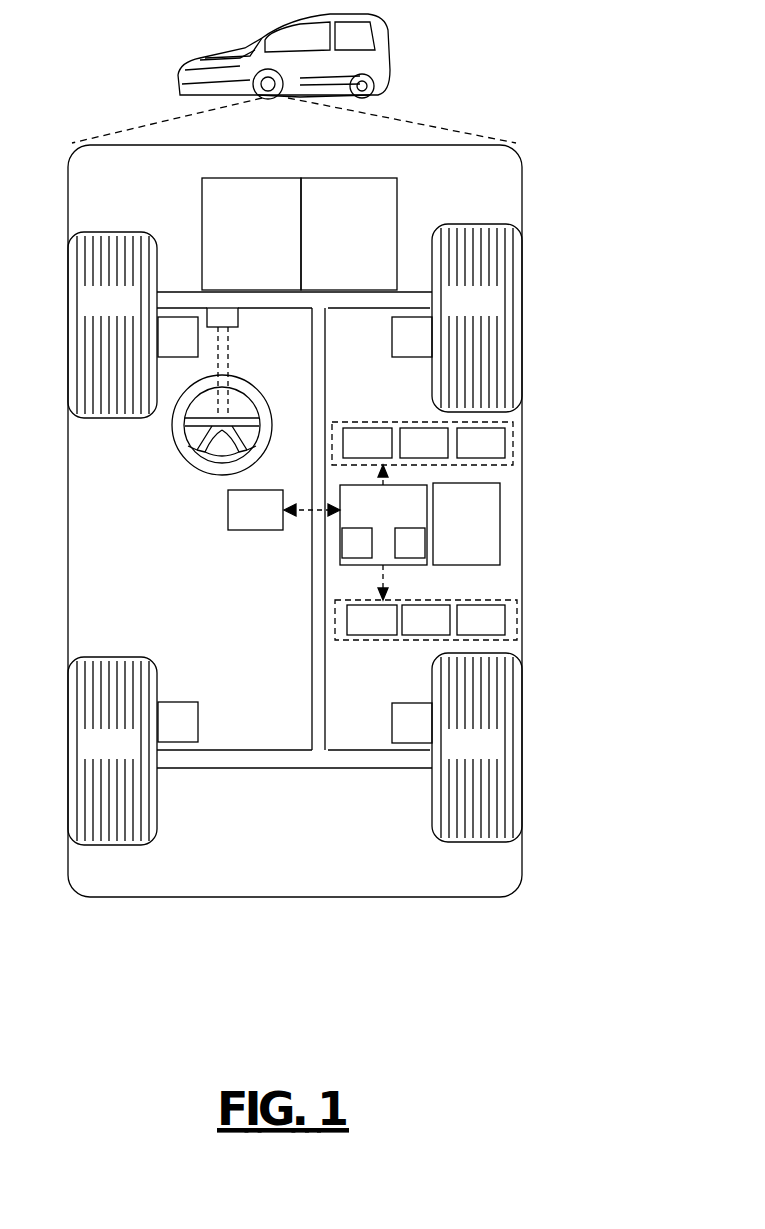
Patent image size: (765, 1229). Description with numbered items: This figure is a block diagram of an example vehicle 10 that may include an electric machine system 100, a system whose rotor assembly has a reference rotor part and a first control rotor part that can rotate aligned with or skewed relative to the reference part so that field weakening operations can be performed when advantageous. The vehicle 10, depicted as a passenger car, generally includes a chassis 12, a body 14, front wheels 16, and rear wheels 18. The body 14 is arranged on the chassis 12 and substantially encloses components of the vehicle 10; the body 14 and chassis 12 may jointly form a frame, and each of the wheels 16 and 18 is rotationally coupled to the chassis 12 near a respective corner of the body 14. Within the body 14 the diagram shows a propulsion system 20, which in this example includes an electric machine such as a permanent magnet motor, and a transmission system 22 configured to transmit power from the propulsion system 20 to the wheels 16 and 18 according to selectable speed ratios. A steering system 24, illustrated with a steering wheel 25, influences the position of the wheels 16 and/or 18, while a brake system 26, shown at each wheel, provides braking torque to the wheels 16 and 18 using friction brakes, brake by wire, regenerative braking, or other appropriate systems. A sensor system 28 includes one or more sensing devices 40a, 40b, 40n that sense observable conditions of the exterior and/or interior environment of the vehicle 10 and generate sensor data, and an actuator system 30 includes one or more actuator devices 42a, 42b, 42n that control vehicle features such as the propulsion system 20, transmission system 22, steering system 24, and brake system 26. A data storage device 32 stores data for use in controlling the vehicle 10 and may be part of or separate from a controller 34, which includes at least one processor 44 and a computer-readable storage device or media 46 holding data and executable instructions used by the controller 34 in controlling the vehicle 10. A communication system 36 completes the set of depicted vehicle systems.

The vehicle 10 is at (168, 55).
The chassis 12 is at (325, 769).
The body 14 is at (68, 491).
The front wheels 16 is at (295, 321).
The rear wheels 18 is at (295, 749).
The propulsion system 20 is at (251, 234).
The transmission system 22 is at (349, 234).
The steering system 24 is at (199, 484).
The steering wheel 25 is at (258, 388).
The brake system 26 is at (295, 530).
The sensor system 28 is at (422, 422).
The actuator system 30 is at (426, 643).
The data storage device 32 is at (255, 510).
The controller 34 is at (383, 525).
The communication system 36 is at (466, 524).
The sensing device 40a is at (367, 443).
The sensing device 40b is at (424, 443).
The sensing device 40n is at (481, 443).
The actuator device 42a is at (372, 620).
The actuator device 42b is at (426, 620).
The actuator device 42n is at (481, 620).
The processor 44 is at (357, 543).
The computer-readable storage device or media 46 is at (410, 543).
The electric machine system 100 is at (547, 357).